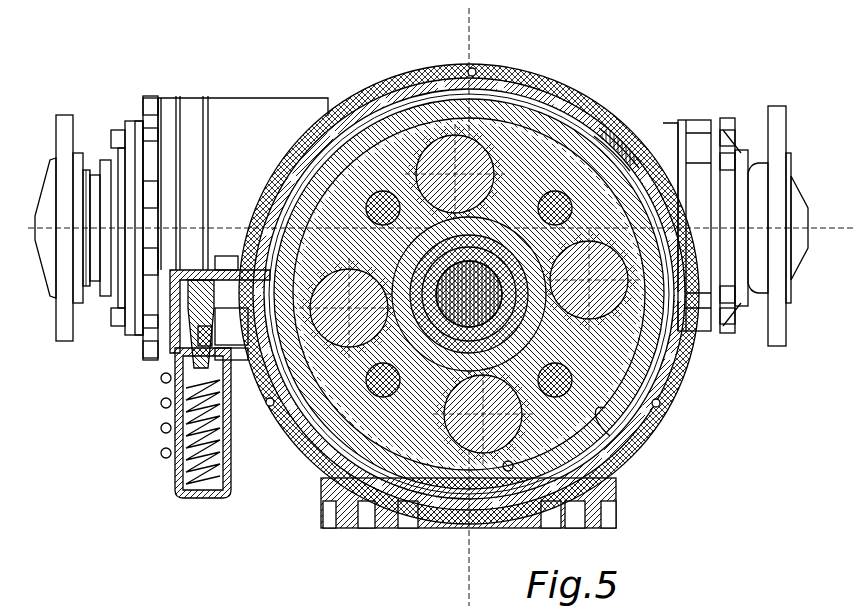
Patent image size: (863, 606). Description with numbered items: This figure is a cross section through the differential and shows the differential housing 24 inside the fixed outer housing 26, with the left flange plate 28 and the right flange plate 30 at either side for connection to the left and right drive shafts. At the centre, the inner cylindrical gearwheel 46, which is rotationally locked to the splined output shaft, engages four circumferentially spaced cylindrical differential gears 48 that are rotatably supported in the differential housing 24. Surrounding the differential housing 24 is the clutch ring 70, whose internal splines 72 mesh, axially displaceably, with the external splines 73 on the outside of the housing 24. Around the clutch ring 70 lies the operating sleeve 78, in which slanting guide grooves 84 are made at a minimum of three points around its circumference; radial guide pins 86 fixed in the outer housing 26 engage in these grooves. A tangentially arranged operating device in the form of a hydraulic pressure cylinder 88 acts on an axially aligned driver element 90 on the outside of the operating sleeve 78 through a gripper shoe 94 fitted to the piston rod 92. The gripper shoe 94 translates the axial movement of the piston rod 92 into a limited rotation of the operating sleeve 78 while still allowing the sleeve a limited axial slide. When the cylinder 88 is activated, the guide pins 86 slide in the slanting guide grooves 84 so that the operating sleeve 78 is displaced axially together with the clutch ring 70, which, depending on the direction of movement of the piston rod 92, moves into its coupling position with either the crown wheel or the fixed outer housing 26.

The differential housing 24 is at (570, 120).
The outer housing 26 is at (373, 82).
The left flange plate 28 is at (58, 335).
The right flange plate 30 is at (777, 310).
The inner cylindrical gearwheel 46 is at (600, 347).
The cylindrical differential gears 48 is at (464, 158).
The clutch ring 70 is at (627, 420).
The internal splines 72 is at (600, 418).
The external splines 73 is at (501, 466).
The operating sleeve 78 is at (600, 130).
The slanting guide grooves 84 is at (497, 66).
The radial guide pins 86 is at (468, 58).
The hydraulic pressure cylinder 88 is at (158, 461).
The driver element 90 is at (232, 268).
The piston rod 92 is at (197, 327).
The gripper shoe 94 is at (226, 352).